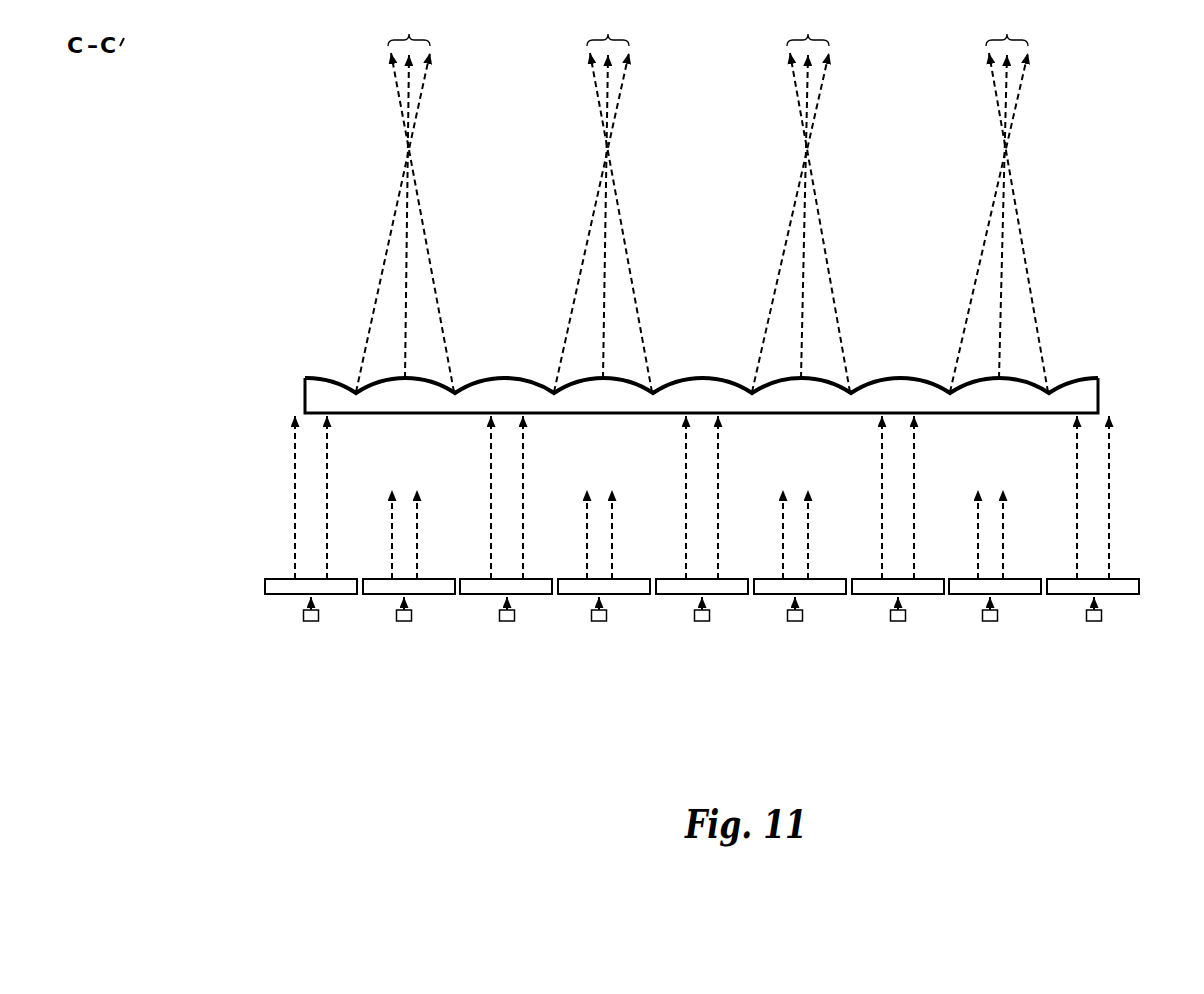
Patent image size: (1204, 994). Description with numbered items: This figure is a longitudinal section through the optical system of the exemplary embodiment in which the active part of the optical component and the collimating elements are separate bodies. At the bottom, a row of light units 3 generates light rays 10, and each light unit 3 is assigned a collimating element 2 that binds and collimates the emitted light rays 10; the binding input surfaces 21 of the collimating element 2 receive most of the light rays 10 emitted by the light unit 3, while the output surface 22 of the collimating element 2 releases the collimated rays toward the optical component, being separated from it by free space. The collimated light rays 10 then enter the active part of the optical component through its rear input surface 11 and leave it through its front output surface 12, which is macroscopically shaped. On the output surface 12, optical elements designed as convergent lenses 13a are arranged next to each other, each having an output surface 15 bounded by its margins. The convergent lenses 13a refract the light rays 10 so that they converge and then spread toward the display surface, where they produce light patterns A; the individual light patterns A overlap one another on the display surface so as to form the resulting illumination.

The light pattern A is at (708, 24).
The light rays 10 is at (392, 100).
The input surface 11 is at (316, 417).
The output surface 12 is at (316, 346).
The convergent lenses 13a is at (325, 392).
The output surface of optical element 15 is at (313, 378).
The binding input surfaces 21 is at (277, 598).
The output surface of collimating element 22 is at (309, 578).
The collimating element 2 is at (344, 598).
The light unit 3 is at (299, 616).